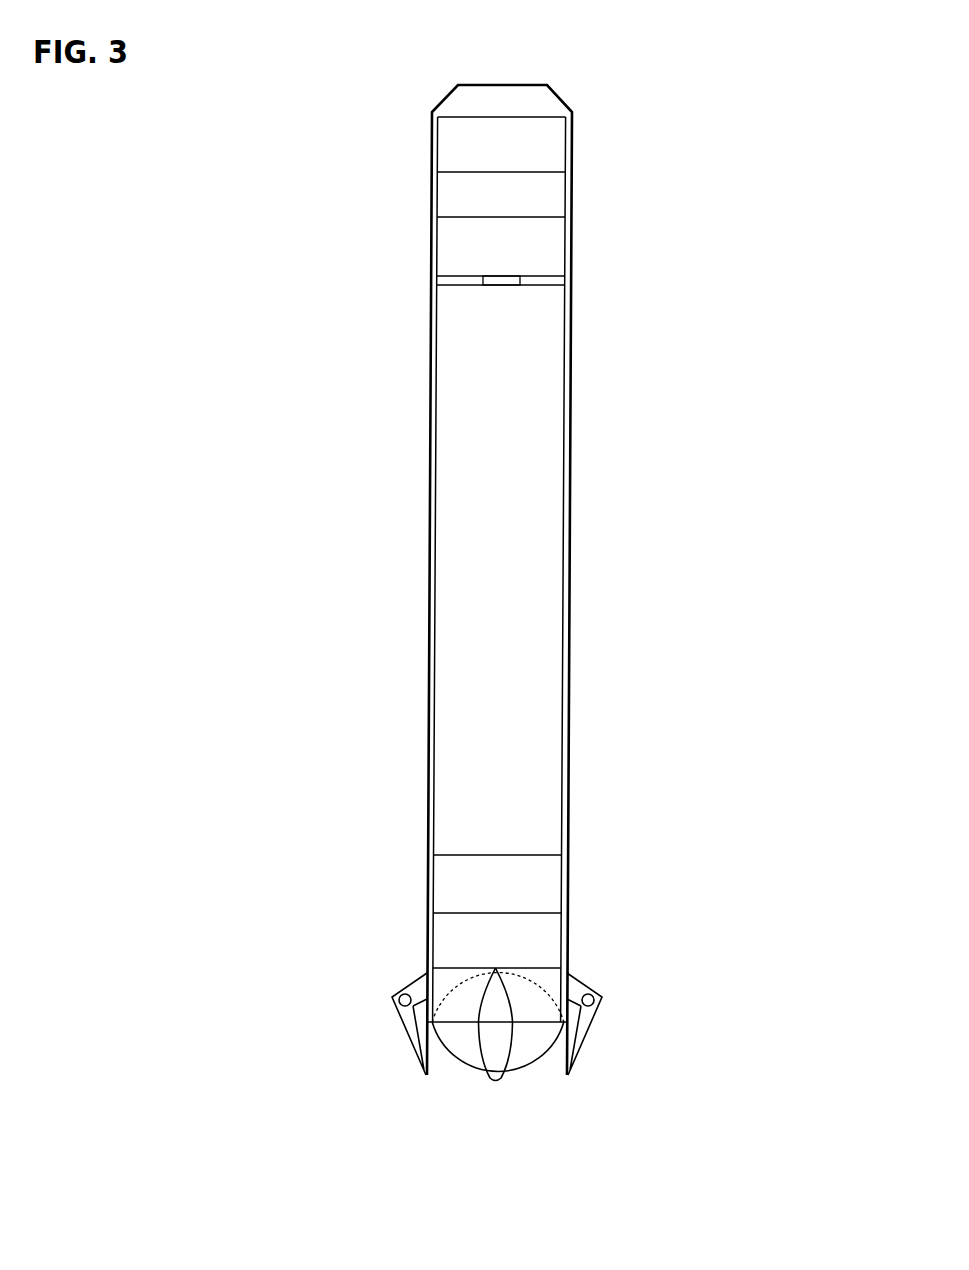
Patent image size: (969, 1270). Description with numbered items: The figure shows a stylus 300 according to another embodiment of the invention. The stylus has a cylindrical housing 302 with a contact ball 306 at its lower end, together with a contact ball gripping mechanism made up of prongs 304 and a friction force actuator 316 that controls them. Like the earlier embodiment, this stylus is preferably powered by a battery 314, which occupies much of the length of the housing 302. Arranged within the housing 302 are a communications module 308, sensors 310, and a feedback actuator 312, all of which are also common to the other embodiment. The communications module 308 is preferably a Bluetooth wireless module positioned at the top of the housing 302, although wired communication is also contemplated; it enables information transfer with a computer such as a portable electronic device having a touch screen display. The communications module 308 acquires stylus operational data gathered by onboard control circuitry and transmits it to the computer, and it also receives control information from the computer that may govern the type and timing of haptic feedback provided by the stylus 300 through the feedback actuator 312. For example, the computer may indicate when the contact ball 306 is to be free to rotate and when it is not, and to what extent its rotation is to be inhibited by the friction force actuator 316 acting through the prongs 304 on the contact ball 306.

The stylus 300 is at (694, 266).
The cylindrical housing 302 is at (537, 85).
The prongs 304 is at (598, 990).
The contact ball 306 is at (468, 1107).
The communications module 308 is at (573, 133).
The sensors 310 is at (573, 185).
The feedback actuator 312 is at (573, 238).
The battery 314 is at (573, 297).
The friction force actuator 316 is at (567, 930).